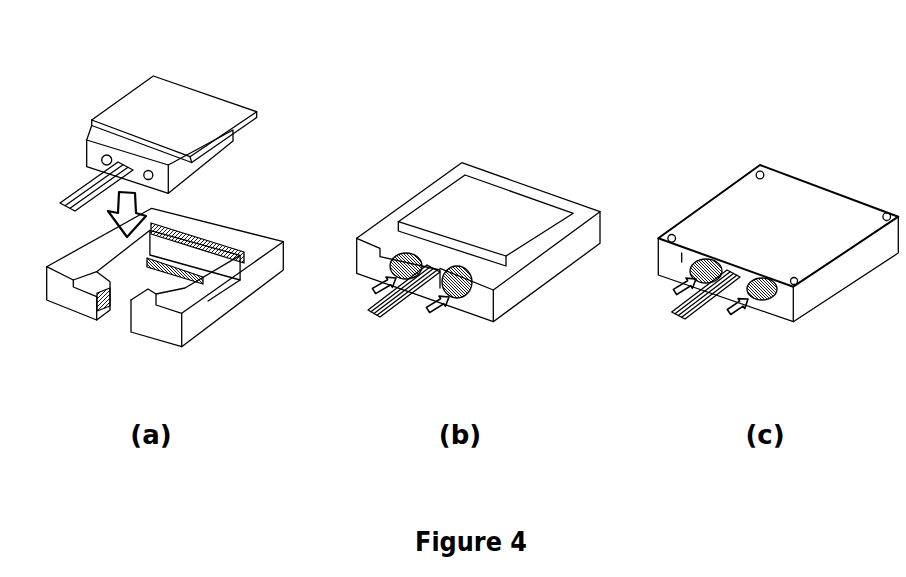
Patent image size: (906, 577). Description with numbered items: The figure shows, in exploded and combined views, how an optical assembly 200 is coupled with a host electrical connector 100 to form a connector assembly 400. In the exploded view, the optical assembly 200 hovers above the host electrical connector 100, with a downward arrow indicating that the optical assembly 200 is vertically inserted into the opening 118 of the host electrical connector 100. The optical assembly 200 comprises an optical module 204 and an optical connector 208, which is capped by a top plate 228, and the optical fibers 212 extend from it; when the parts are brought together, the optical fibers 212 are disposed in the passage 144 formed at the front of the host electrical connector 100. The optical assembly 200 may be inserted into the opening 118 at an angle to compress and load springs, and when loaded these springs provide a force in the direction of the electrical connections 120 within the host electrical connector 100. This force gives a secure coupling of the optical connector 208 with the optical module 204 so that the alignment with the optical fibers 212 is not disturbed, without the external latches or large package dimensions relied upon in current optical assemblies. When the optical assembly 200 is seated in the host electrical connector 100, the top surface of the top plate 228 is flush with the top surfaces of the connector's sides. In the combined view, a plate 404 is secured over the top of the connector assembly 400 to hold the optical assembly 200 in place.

The host electrical connector 100 is at (240, 290).
The opening 118 is at (115, 278).
The electrical connections 120 is at (228, 245).
The passage 144 is at (102, 334).
The optical assembly 200 is at (91, 74).
The optical module 204 is at (230, 145).
The optical connector 208 is at (92, 130).
The optical fibers 212 is at (70, 193).
The top plate 228 is at (253, 115).
The connector assembly 400 is at (678, 147).
The plate 404 is at (693, 217).